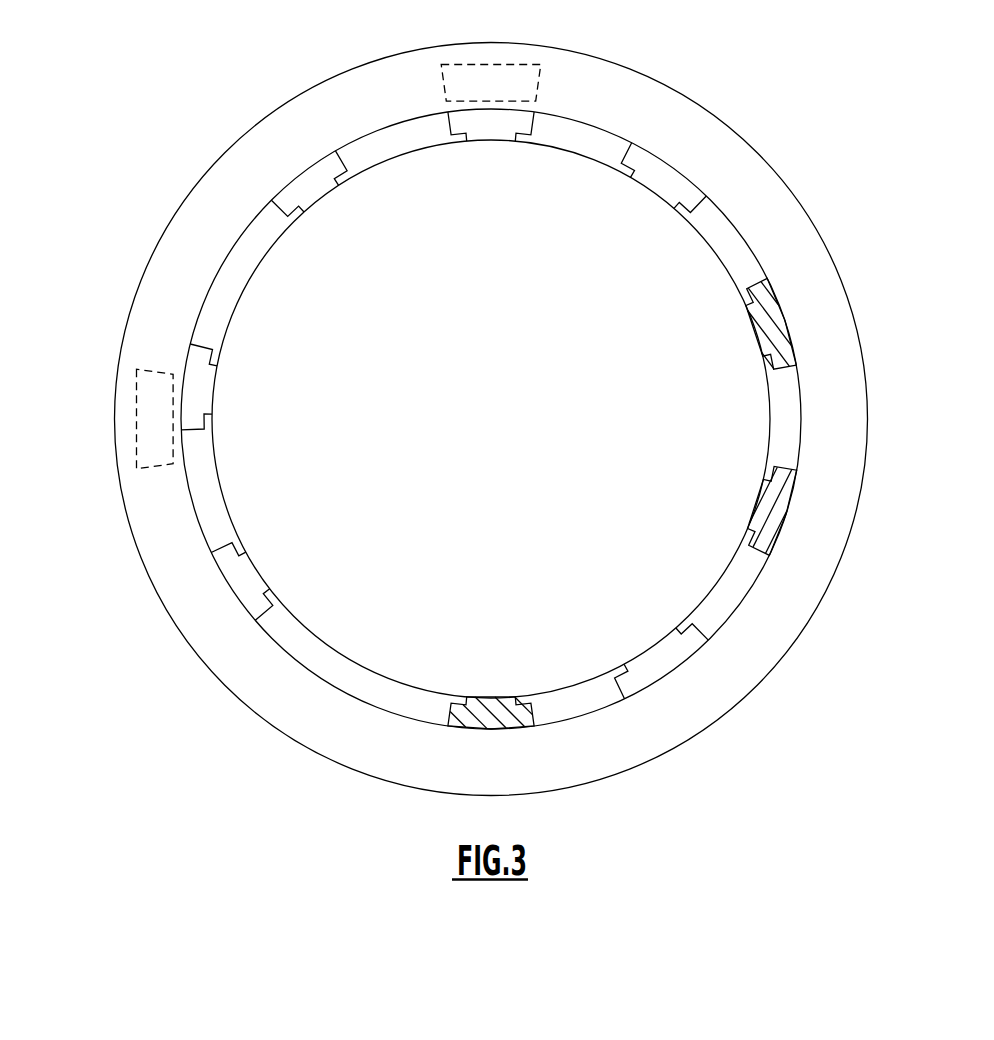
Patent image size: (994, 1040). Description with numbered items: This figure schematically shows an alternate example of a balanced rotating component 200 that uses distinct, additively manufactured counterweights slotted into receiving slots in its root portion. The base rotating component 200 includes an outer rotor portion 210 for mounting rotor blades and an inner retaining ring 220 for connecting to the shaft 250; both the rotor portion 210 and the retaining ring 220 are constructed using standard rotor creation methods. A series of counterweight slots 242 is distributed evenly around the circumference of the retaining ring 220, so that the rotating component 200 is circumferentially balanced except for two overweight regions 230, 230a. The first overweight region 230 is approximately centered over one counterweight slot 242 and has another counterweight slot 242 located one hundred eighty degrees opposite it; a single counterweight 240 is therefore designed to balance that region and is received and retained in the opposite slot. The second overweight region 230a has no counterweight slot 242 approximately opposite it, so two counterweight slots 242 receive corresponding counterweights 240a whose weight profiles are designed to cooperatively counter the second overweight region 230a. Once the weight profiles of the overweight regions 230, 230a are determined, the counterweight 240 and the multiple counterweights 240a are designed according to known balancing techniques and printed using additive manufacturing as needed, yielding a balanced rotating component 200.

The rotating component 200 is at (152, 168).
The rotor portion 210 is at (280, 138).
The retaining ring 220 is at (377, 151).
The first overweight region 230 is at (484, 82).
The second overweight region 230a is at (162, 448).
The counterweight 240 is at (472, 707).
The counterweights 240a is at (756, 319).
The counterweight slot 242 is at (662, 638).
The shaft 250 is at (512, 429).